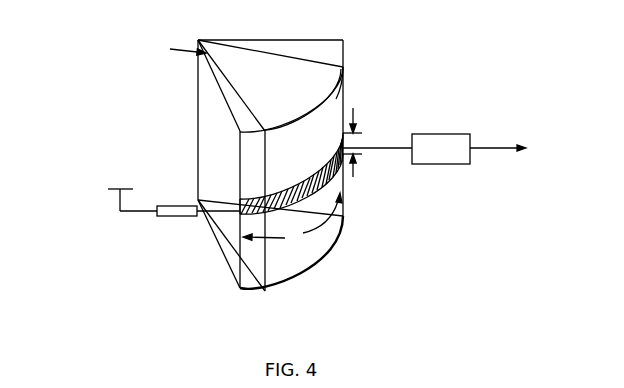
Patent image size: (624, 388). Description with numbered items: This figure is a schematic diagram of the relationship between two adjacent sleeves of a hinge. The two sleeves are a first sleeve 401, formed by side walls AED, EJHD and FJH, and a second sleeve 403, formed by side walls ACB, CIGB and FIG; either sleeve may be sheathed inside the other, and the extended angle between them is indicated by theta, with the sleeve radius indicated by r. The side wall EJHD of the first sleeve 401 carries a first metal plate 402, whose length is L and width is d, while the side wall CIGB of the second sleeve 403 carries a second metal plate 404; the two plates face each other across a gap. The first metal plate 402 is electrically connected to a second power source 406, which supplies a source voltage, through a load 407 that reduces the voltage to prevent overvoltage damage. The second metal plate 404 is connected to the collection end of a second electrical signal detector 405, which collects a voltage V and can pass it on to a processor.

The first sleeve 401 is at (208, 104).
The first metal plate 402 is at (231, 193).
The second sleeve 403 is at (355, 65).
The second metal plate 404 is at (356, 140).
The second electrical signal detector 405 is at (458, 174).
The second power source 406 is at (93, 207).
The load 407 is at (166, 227).